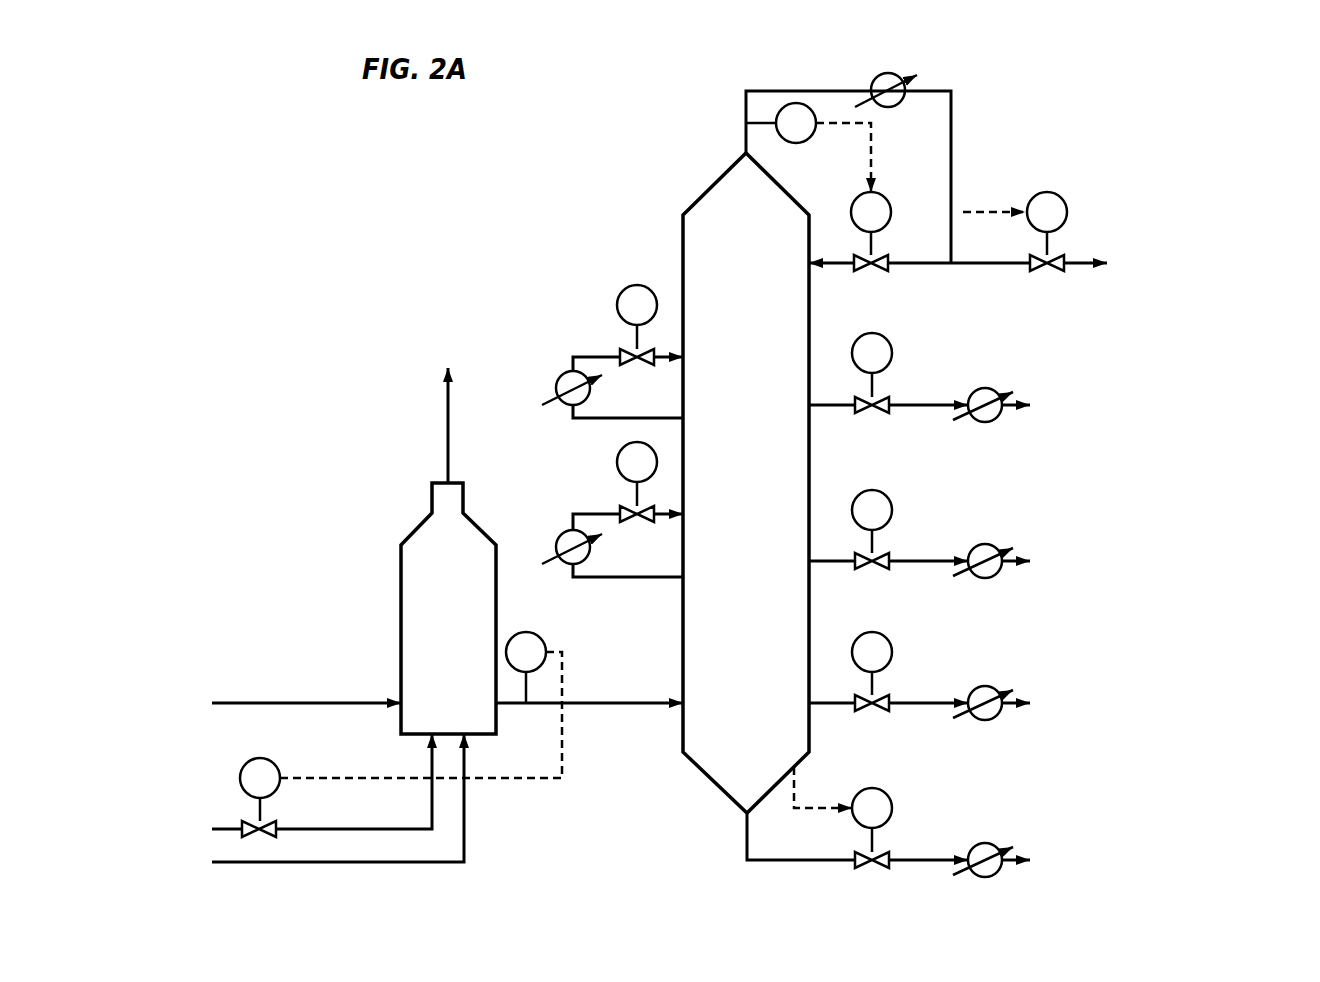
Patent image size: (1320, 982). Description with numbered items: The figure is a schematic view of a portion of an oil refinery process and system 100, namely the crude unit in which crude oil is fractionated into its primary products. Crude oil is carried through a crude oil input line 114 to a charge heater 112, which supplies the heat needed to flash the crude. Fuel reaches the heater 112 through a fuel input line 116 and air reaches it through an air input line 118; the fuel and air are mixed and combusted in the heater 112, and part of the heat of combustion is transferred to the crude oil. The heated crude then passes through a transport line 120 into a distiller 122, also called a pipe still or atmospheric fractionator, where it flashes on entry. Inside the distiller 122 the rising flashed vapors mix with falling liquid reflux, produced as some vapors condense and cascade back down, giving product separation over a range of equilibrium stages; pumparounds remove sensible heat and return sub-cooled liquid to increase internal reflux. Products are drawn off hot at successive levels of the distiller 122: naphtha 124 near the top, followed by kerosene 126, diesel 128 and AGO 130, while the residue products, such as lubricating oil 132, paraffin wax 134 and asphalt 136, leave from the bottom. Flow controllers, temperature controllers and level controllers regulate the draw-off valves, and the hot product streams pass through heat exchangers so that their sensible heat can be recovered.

The crude oil refining system 100 is at (332, 248).
The heater 112 is at (477, 527).
The crude oil input line 114 is at (277, 700).
The fuel input line 116 is at (230, 830).
The air input line 118 is at (465, 844).
The transport line 120 is at (613, 702).
The distiller 122 is at (700, 197).
The naphtha 124 is at (1140, 232).
The kerosene 126 is at (1080, 373).
The diesel 128 is at (1065, 530).
The AGO 130 is at (1063, 672).
The lubricating oil 132 is at (1063, 828).
The paraffin wax 134 is at (1124, 834).
The asphalt 136 is at (1221, 834).